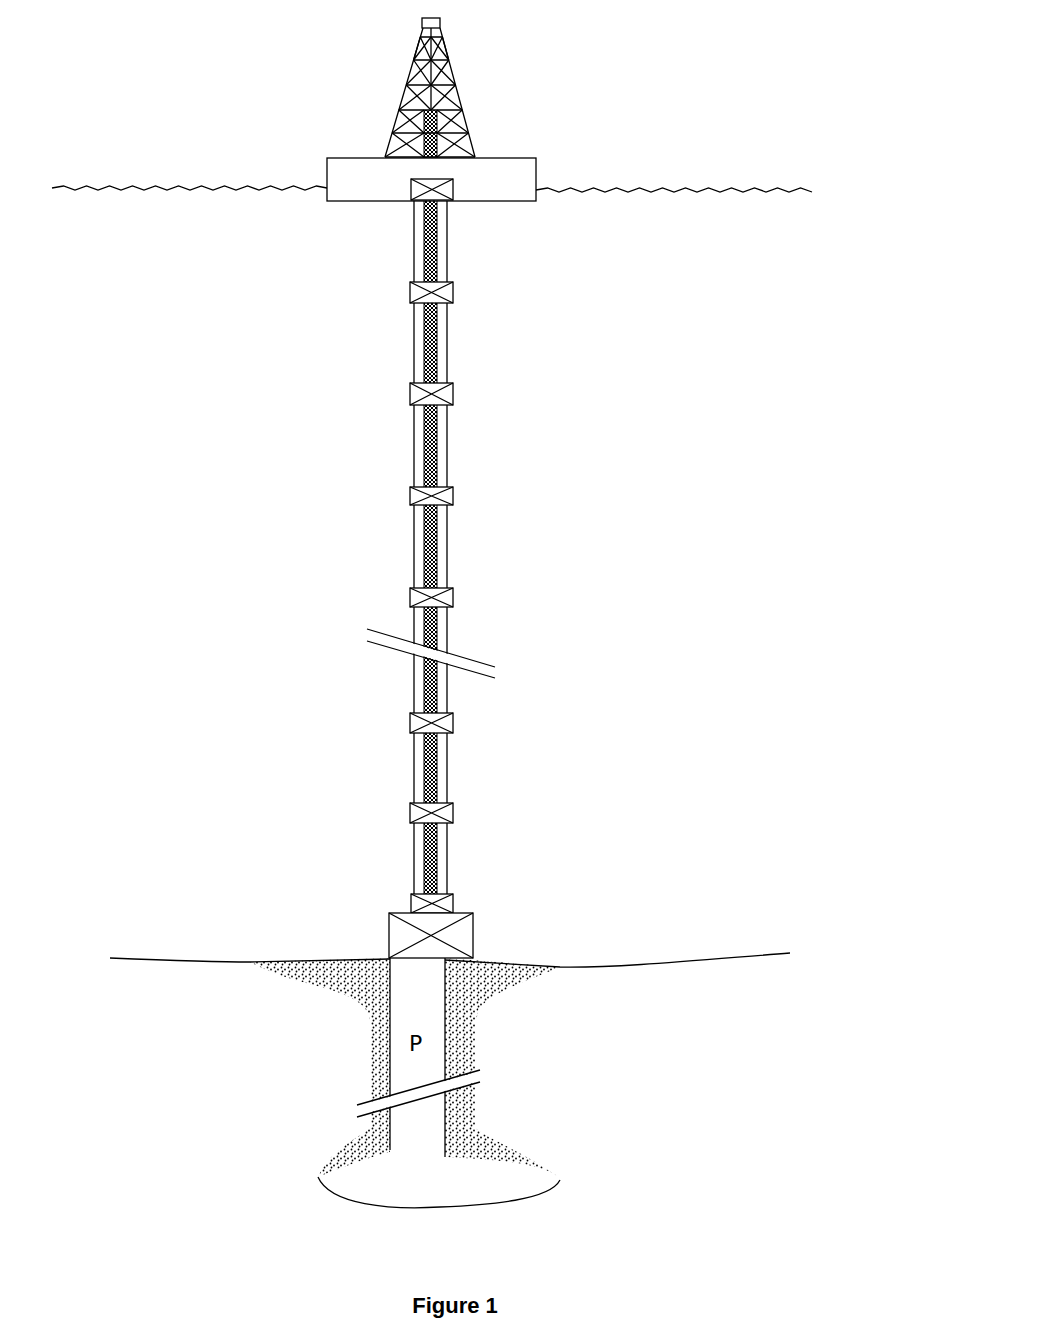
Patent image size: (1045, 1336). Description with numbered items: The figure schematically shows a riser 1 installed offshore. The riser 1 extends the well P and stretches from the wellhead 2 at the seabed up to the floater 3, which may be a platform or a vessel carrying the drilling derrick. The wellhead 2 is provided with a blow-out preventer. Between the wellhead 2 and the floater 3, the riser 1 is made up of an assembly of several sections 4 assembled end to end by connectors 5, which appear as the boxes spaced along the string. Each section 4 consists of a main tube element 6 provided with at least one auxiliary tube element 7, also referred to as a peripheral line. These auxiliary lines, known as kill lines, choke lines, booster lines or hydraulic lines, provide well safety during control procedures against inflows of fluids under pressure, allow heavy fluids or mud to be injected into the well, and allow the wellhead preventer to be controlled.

The riser 1 is at (333, 511).
The wellhead 2 is at (473, 932).
The floater 3 is at (536, 168).
The section 4 is at (371, 295).
The connector 5 is at (458, 598).
The main tube element 6 is at (437, 553).
The auxiliary tube element 7 is at (447, 452).